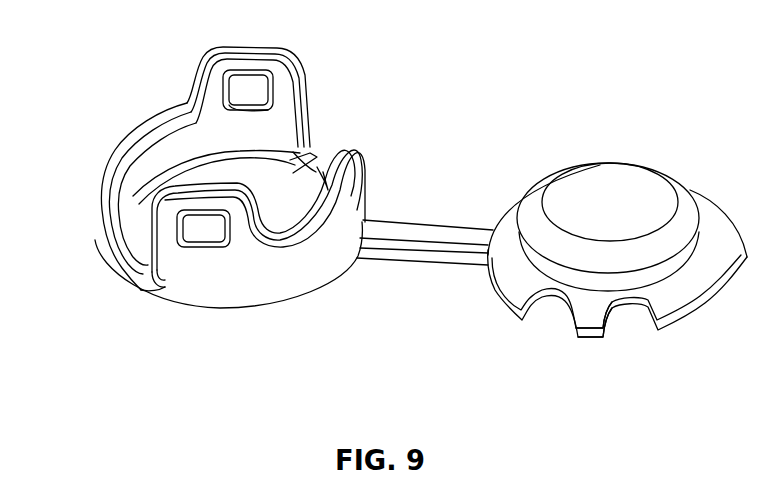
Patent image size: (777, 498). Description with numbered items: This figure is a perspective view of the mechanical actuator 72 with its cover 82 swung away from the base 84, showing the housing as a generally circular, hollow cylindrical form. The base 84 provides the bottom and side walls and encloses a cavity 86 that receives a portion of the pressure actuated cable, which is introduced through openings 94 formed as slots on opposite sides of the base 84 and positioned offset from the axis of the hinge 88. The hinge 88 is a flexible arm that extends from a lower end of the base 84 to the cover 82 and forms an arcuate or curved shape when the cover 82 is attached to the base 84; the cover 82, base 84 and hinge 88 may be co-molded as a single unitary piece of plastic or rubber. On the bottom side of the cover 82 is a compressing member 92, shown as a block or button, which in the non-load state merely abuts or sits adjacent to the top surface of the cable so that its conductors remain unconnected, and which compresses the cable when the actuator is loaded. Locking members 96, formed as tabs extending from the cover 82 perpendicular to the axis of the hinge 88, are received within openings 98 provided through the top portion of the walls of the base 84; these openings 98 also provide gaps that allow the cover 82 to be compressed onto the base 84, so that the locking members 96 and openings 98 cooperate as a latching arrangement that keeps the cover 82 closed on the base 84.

The mechanical actuator 72 is at (195, 405).
The cover 82 is at (516, 308).
The base 84 is at (255, 290).
The cavity 86 is at (193, 118).
The hinge 88 is at (445, 232).
The compressing member 92 is at (601, 205).
The openings 94 is at (302, 152).
The locking members 96 is at (590, 332).
The openings 98 is at (252, 88).